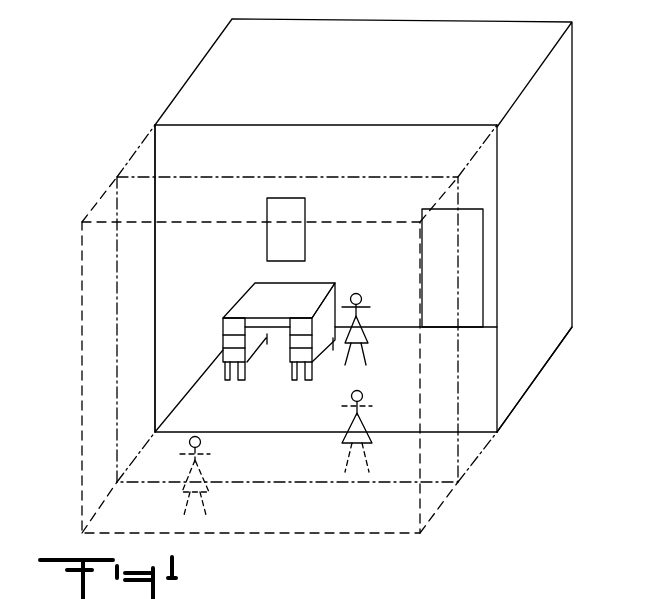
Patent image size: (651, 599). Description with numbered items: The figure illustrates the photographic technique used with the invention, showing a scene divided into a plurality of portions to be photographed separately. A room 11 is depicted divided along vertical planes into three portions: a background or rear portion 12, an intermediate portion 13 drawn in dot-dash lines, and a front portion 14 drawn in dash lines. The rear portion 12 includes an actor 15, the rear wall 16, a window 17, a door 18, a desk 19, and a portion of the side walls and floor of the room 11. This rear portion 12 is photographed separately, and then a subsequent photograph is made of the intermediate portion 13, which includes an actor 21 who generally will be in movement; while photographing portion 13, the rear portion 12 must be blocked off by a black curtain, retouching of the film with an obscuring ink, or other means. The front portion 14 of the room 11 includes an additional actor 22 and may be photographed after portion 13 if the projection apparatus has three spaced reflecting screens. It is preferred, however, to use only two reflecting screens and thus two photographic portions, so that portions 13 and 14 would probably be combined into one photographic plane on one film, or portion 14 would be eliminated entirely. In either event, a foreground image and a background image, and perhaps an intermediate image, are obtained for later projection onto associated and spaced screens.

The room 11 is at (453, 20).
The background or rear portion 12 is at (527, 388).
The intermediate portion 13 is at (471, 468).
The front portion 14 is at (436, 514).
The actor 15 is at (358, 313).
The rear wall 16 is at (222, 266).
The window 17 is at (295, 254).
The door 18 is at (450, 293).
The desk 19 is at (291, 310).
The actor 21 is at (360, 416).
The additional actor 22 is at (200, 462).